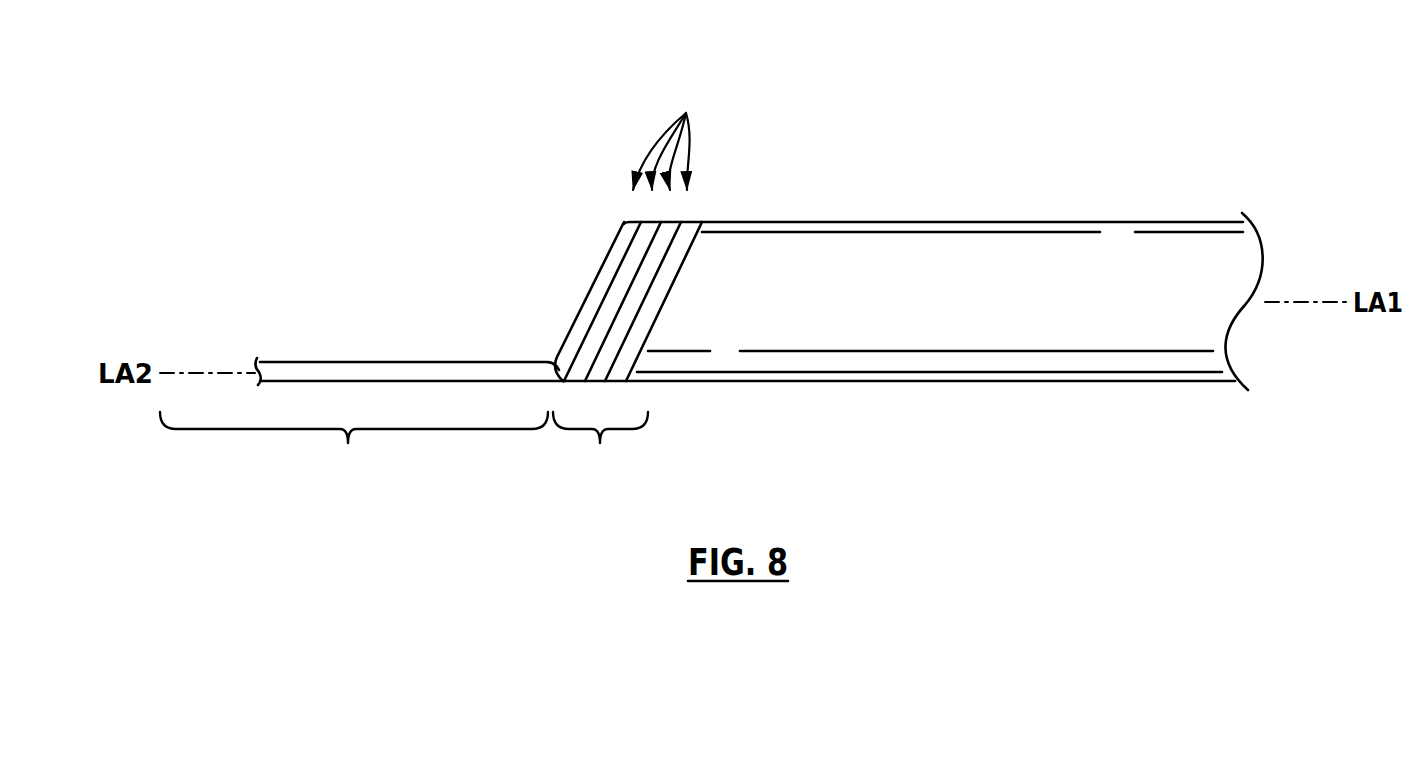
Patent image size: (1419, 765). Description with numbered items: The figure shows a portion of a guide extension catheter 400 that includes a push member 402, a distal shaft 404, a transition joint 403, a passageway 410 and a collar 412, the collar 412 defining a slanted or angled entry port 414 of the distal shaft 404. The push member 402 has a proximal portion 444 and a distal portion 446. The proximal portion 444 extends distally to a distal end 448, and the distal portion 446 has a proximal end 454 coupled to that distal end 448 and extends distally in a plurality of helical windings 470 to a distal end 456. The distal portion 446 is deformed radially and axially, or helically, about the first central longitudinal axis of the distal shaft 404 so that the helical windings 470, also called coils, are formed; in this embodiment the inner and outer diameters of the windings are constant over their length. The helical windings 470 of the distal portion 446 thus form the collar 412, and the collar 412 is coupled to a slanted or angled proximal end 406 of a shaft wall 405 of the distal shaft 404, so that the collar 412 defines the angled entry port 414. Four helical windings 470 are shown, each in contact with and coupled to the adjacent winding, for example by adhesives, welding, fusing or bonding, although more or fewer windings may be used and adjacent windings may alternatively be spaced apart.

The guide extension catheter 400 is at (492, 147).
The push member 402 is at (293, 361).
The transition joint 403 is at (595, 447).
The distal shaft 404 is at (969, 250).
The shaft wall 405 is at (890, 223).
The angled proximal end 406 is at (700, 220).
The passageway 410 is at (1277, 283).
The collar 412 is at (622, 237).
The angled entry port 414 is at (497, 260).
The proximal portion 444 is at (354, 447).
The distal portion 446 is at (595, 447).
The distal end 448 is at (553, 362).
The proximal end 454 is at (553, 358).
The distal end 456 is at (700, 220).
The helical windings 470 is at (671, 133).